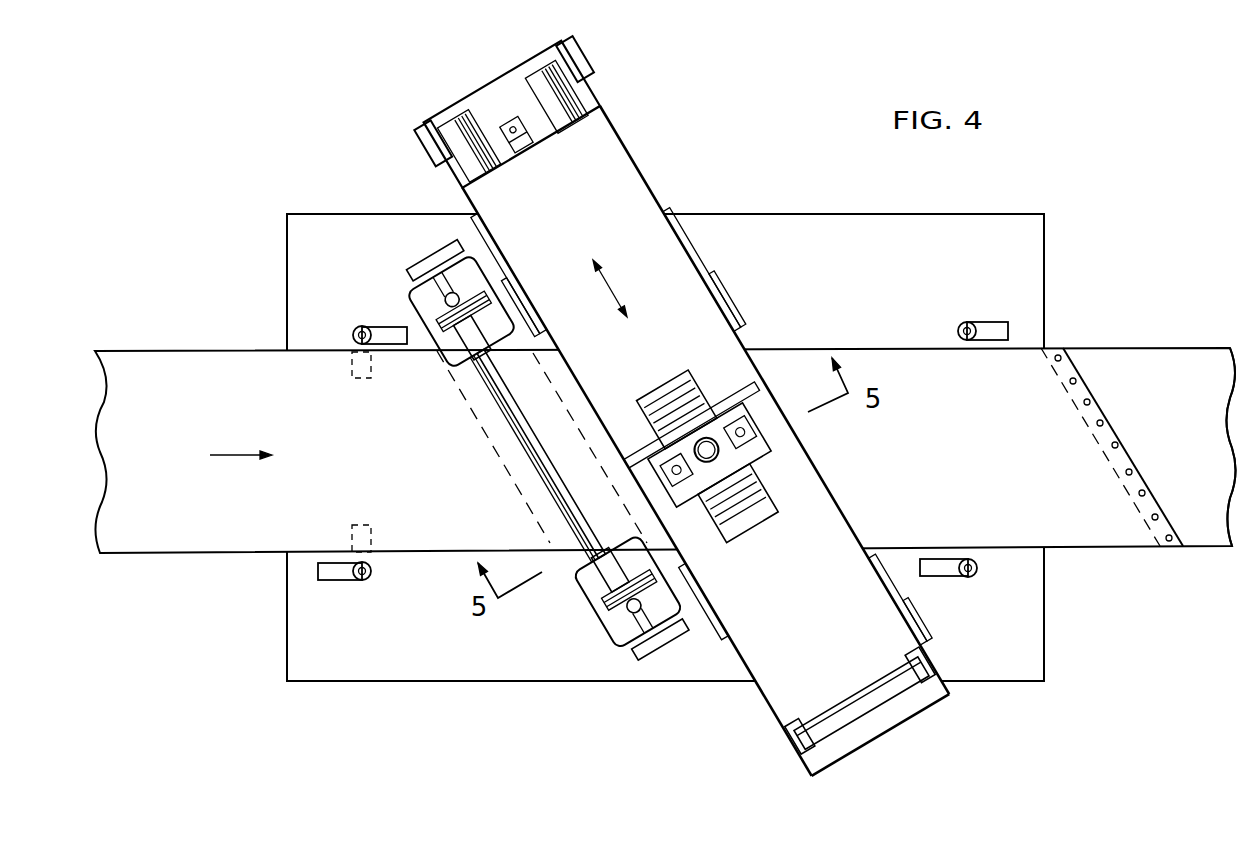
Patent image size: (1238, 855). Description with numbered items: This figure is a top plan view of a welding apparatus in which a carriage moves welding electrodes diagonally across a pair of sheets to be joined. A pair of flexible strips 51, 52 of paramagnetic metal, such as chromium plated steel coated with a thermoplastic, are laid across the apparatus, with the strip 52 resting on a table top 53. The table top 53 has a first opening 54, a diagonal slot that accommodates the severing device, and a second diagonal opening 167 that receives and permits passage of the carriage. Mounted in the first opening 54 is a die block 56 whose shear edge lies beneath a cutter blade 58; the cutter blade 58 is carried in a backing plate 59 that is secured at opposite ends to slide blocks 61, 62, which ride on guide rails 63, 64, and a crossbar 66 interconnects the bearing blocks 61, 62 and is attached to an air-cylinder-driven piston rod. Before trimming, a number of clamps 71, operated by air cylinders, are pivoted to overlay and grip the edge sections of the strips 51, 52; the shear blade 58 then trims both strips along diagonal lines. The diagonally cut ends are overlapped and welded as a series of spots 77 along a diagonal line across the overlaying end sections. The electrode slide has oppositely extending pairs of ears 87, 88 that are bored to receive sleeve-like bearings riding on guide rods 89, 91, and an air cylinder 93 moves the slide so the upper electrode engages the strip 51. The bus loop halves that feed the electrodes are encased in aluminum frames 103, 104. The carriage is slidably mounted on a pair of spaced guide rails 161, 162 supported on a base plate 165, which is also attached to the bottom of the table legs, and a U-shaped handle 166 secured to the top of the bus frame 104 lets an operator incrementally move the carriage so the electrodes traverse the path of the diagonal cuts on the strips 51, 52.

The flexible strip 51 is at (222, 554).
The flexible strip 52 is at (1148, 346).
The table top 53 is at (1030, 623).
The first opening 54 is at (478, 405).
The die block 56 is at (472, 347).
The cutter blade 58 is at (555, 483).
The backing plate 59 is at (525, 440).
The slide block 61 is at (440, 310).
The slide block 62 is at (632, 606).
The guide rail 63 is at (448, 299).
The guide rail 64 is at (630, 620).
The crossbar 66 is at (598, 580).
The clamp 71 is at (356, 330).
The weld spots 77 is at (1076, 381).
The ears 87 is at (677, 468).
The ears 88 is at (762, 445).
The guide rod 89 is at (660, 430).
The guide rod 91 is at (748, 432).
The air cylinder 93 is at (718, 458).
The aluminum frame 103 is at (468, 202).
The aluminum frame 104 is at (848, 534).
The guide rail 161 is at (440, 125).
The guide rail 162 is at (540, 68).
The base plate 165 is at (488, 93).
The U-shaped handle 166 is at (868, 704).
The second diagonal opening 167 is at (666, 213).